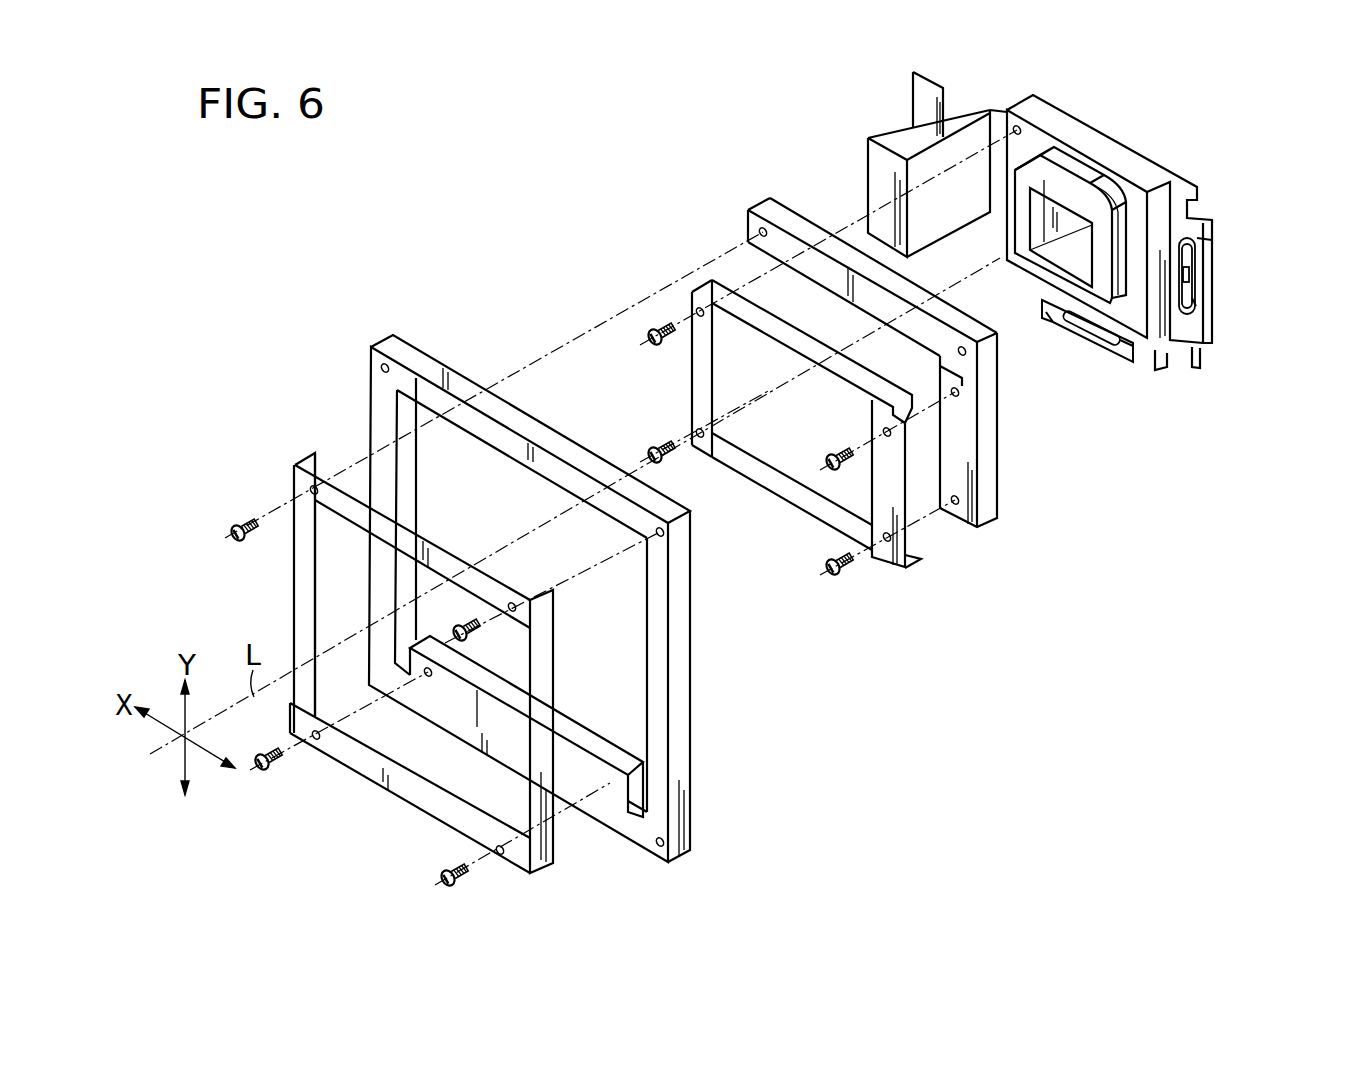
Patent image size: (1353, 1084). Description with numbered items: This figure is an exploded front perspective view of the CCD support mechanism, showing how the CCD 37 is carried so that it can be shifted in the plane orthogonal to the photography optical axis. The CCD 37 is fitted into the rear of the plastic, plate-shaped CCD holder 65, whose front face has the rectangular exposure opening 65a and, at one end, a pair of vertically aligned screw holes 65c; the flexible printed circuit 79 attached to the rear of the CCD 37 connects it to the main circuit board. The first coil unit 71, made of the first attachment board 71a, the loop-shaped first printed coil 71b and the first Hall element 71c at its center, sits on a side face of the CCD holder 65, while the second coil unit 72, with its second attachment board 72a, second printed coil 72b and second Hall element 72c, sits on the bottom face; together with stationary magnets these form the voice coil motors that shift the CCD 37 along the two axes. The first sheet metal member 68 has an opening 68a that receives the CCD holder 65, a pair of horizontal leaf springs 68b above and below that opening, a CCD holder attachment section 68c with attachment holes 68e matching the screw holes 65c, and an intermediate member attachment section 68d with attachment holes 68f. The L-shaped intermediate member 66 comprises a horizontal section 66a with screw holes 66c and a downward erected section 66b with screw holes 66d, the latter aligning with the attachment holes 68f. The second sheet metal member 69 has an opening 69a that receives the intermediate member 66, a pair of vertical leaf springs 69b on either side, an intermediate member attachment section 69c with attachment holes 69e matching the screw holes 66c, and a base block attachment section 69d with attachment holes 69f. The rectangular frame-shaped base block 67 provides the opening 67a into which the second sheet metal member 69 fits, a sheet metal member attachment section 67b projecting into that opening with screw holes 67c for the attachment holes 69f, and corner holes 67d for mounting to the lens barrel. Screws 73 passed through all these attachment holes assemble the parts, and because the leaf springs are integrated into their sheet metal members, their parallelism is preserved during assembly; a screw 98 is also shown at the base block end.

The CCD 37 is at (1058, 245).
The CCD holder 65 is at (1135, 143).
The exposure opening 65a is at (1040, 215).
The screw holes 65c is at (1022, 126).
The intermediate member 66 is at (990, 477).
The horizontal section 66a is at (803, 213).
The erected section 66b is at (985, 433).
The screw holes 66c is at (753, 232).
The screw holes 66d is at (980, 513).
The base block 67 is at (693, 698).
The opening 67a is at (417, 460).
The sheet metal member attachment section 67b is at (594, 753).
The screw holes 67c is at (427, 677).
The screw hole 67d is at (380, 368).
The first sheet metal member 68 is at (915, 575).
The opening 68a is at (715, 368).
The horizontal leaf springs 68b is at (822, 345).
The CCD holder attachment section 68c is at (693, 405).
The intermediate member attachment section 68d is at (905, 505).
The attachment holes 68e is at (697, 308).
The attachment holes 68f is at (865, 538).
The second sheet metal member 69 is at (546, 873).
The opening 69a is at (347, 528).
The vertical leaf springs 69b is at (300, 592).
The intermediate member attachment section 69c is at (453, 567).
The base block attachment section 69d is at (420, 800).
The attachment holes 69e is at (300, 490).
The attachment holes 69f is at (315, 740).
The first coil unit 71 is at (1218, 320).
The first attachment board 71a is at (1207, 240).
The first printed coil 71b is at (1189, 274).
The first Hall element 71c is at (1196, 305).
The second coil unit 72 is at (1135, 353).
The second attachment board 72a is at (1061, 323).
The second printed coil 72b is at (1110, 344).
The second Hall element 72c is at (1100, 333).
The screws 73 is at (646, 342).
The flexible printed circuit 79 is at (913, 103).
The screw 98 is at (226, 537).